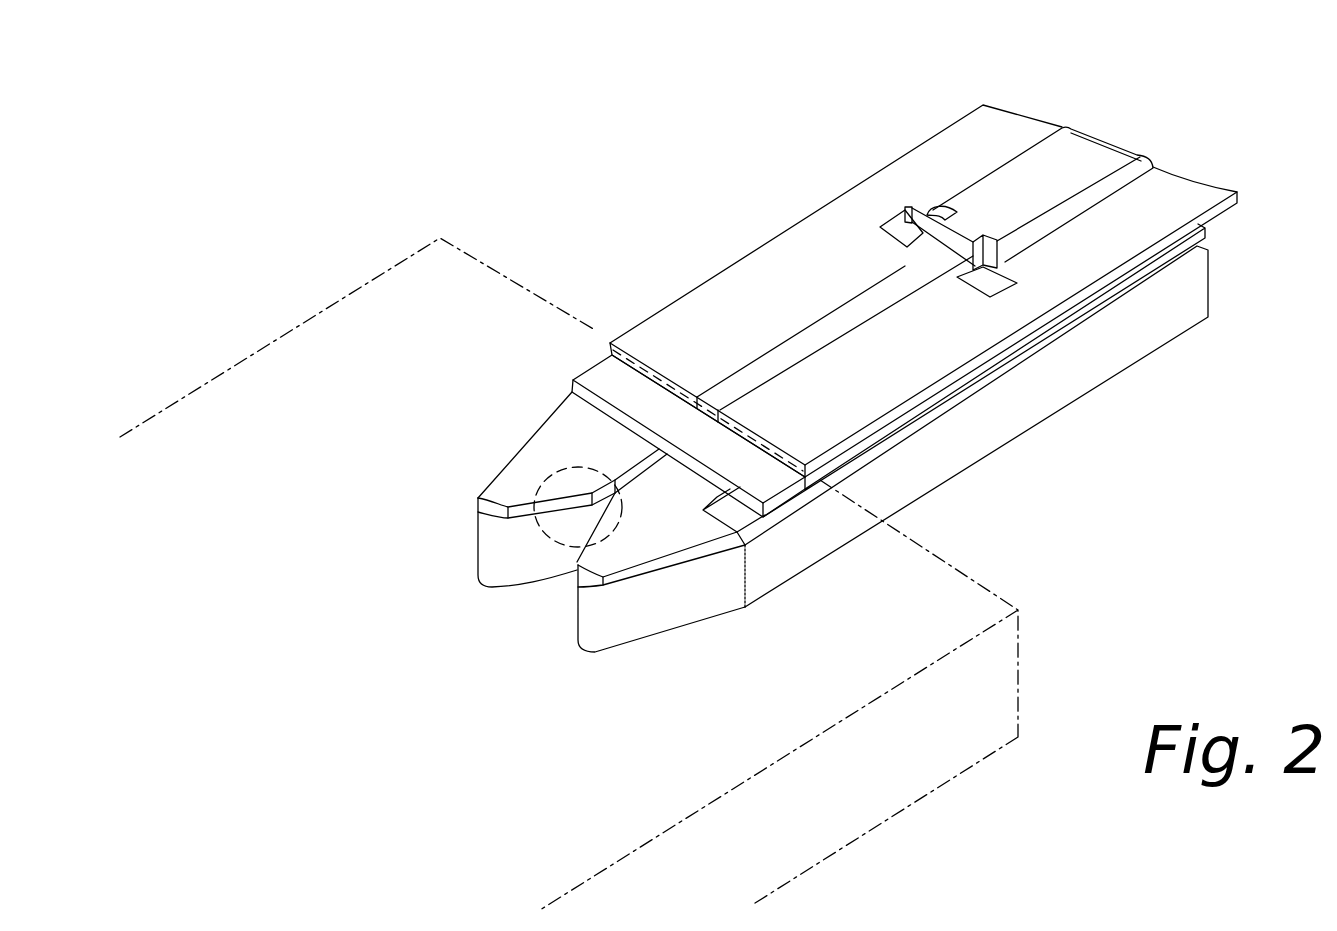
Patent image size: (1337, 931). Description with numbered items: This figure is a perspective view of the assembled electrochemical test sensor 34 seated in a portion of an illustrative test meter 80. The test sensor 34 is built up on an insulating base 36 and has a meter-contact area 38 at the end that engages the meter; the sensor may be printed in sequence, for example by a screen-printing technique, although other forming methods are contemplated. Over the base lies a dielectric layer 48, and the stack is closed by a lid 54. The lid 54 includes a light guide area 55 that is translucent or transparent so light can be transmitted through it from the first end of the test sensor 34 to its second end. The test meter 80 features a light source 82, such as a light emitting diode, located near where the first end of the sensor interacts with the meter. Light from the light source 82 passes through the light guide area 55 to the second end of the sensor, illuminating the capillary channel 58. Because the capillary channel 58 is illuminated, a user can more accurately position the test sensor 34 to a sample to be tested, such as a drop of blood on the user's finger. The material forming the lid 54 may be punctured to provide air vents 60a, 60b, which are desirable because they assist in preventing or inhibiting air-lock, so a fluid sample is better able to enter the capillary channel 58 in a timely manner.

The electrochemical test sensor 34 is at (464, 357).
The insulating base 36 is at (1148, 349).
The meter-contact area 38 is at (472, 469).
The dielectric layer 48 is at (1207, 233).
The lid 54 is at (1240, 192).
The light guide area 55 is at (792, 343).
The capillary channel 58 is at (1158, 127).
The air vent 60a is at (991, 262).
The air vent 60b is at (890, 213).
The test meter 80 is at (292, 330).
The light source 82 is at (565, 470).